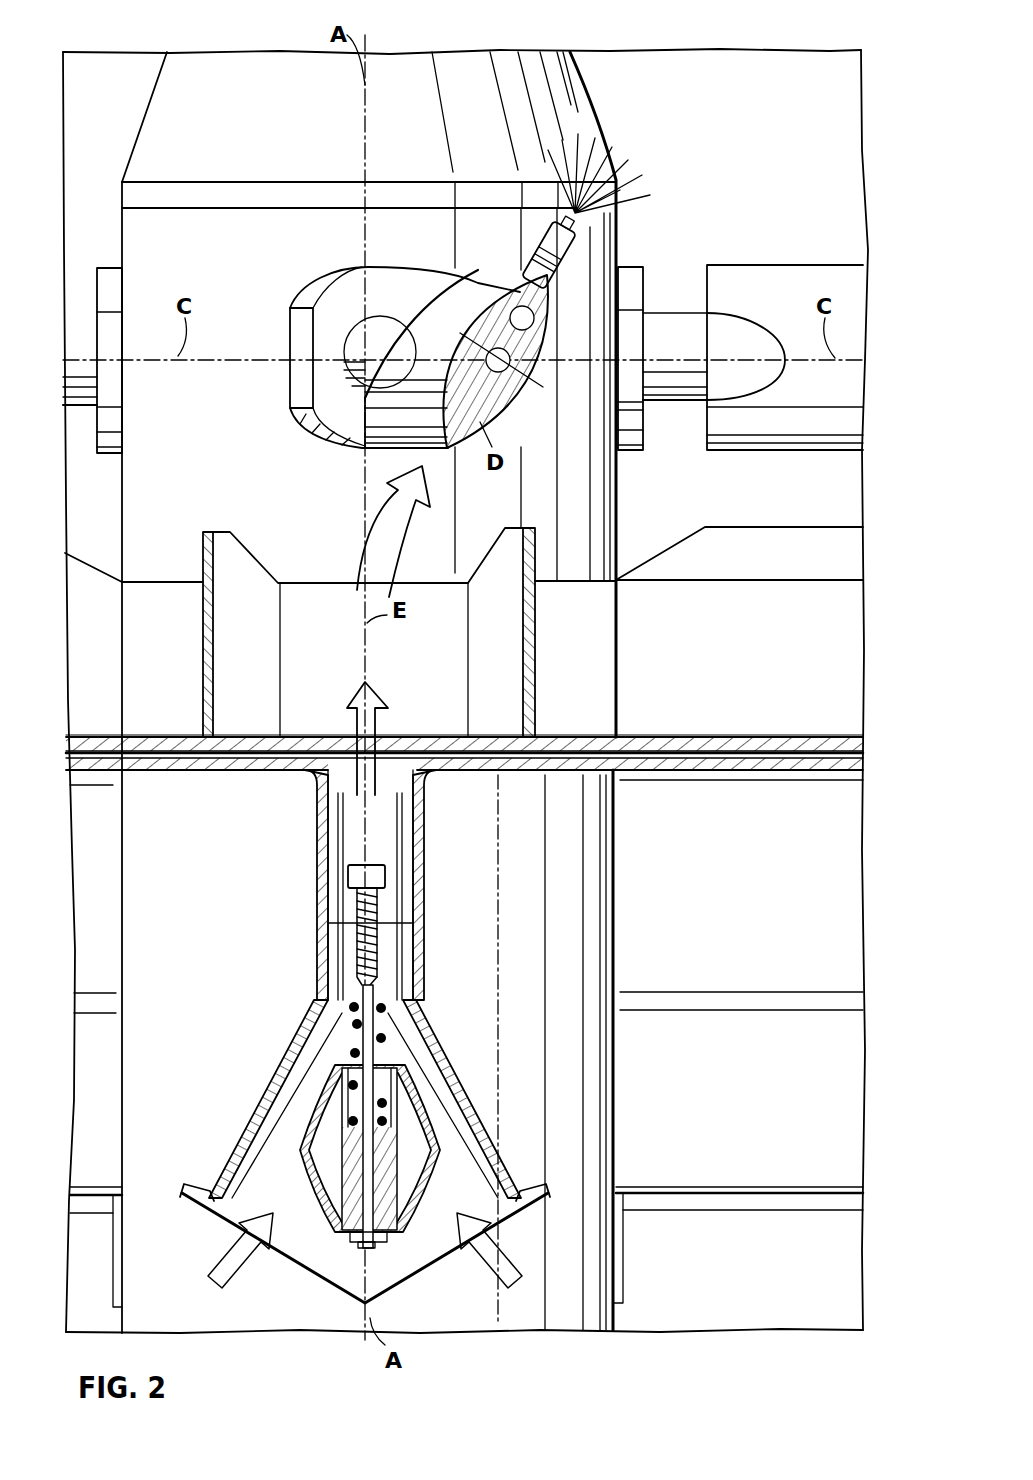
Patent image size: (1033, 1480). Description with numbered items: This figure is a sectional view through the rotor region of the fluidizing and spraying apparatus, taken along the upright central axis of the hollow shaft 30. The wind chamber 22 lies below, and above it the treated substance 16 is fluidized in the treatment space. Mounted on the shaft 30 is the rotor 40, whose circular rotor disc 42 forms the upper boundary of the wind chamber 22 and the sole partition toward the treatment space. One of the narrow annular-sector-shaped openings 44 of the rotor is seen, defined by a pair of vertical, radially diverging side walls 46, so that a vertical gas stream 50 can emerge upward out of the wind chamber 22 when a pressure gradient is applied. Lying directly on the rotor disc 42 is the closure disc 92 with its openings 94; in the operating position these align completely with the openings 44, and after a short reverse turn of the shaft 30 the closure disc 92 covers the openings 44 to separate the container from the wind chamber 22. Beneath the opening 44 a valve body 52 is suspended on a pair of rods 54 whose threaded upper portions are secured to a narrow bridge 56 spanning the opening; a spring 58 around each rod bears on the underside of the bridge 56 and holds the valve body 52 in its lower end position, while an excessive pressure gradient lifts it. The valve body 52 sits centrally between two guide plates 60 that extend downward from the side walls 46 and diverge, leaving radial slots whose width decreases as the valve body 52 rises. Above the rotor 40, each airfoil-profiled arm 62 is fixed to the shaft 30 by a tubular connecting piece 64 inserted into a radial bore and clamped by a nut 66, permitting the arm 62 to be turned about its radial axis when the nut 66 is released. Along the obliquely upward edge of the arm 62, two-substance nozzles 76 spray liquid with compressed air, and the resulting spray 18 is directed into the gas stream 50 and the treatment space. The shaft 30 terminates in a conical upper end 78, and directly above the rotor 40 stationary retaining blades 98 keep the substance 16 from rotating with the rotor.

The substance 16 is at (815, 80).
The spray jet 18 is at (618, 167).
The wind chamber 22 is at (735, 1290).
The shaft 30 is at (598, 522).
The rotor 40 is at (647, 1283).
The rotor disc 42 is at (180, 762).
The opening 44 is at (350, 806).
The side walls 46 is at (321, 866).
The gas stream 50 is at (392, 517).
The valve body 52 is at (300, 1165).
The rods 54 is at (358, 1040).
The bridge 56 is at (336, 951).
The spring 58 is at (396, 1027).
The guide plates 60 is at (264, 1116).
The arm 62 is at (487, 287).
The tubular connecting piece 64 is at (676, 385).
The nut 66 is at (110, 268).
The nozzles 76 is at (577, 246).
The conical upper end 78 is at (170, 97).
The closure disc 92 is at (800, 738).
The openings 94 is at (402, 735).
The retaining blades 98 is at (214, 530).